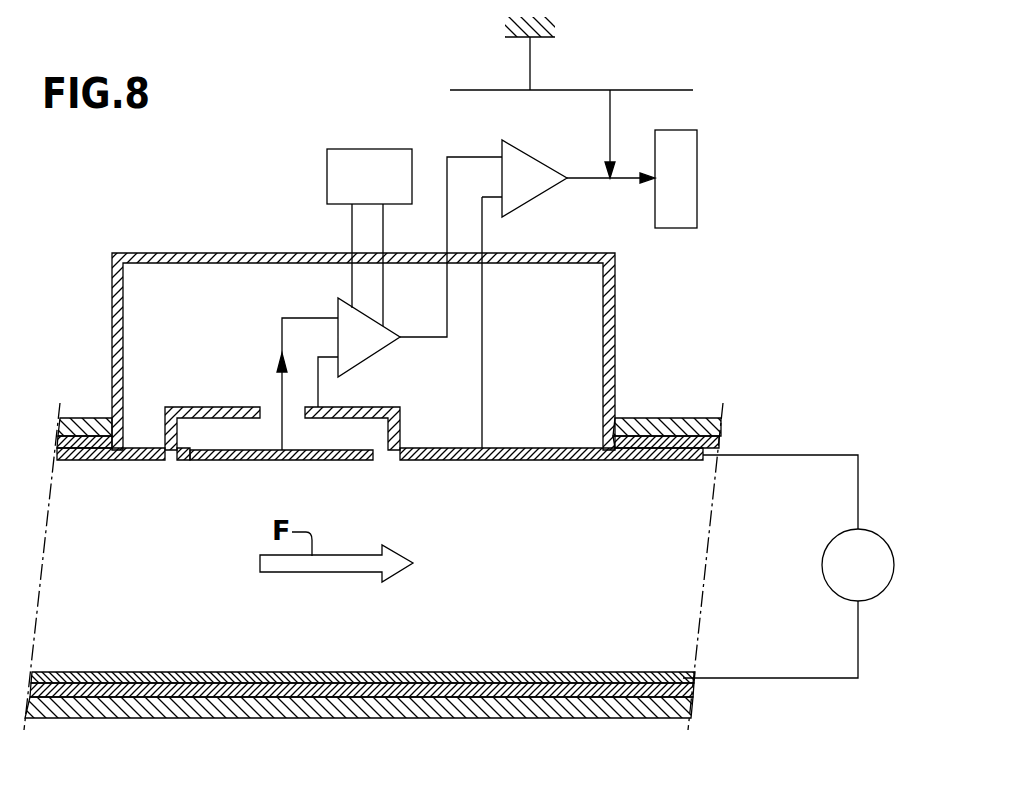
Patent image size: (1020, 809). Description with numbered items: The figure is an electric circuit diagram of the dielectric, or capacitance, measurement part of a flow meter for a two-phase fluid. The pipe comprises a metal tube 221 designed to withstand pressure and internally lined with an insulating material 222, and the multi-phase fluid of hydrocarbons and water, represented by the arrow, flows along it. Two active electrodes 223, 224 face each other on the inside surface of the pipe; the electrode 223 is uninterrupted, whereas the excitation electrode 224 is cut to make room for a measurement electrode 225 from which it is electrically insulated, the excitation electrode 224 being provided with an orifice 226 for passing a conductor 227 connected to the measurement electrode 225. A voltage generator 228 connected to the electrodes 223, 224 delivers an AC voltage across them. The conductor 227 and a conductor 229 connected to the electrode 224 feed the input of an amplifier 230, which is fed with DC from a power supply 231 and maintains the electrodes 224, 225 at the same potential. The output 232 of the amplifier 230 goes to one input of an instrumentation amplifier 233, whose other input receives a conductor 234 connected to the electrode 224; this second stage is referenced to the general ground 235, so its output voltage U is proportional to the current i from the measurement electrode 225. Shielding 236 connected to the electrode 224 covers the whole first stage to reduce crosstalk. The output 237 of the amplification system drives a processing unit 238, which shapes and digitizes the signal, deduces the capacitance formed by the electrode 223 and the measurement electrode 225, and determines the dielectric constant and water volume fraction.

The metal tube 221 is at (185, 708).
The insulating material 222 is at (330, 697).
The active electrode 223 is at (632, 672).
The excitation electrode 224 is at (678, 462).
The measurement electrode 225 is at (245, 462).
The orifice 226 is at (270, 410).
The conductor 227 is at (310, 287).
The voltage generator 228 is at (835, 562).
The conductor 229 is at (322, 385).
The amplifier 230 is at (378, 343).
The power supply 231 is at (370, 160).
The output of the amplifier 232 is at (480, 157).
The instrumentation amplifier 233 is at (518, 177).
The conductor 234 is at (482, 383).
The general ground 235 is at (482, 90).
The shielding 236 is at (215, 253).
The output of the amplification system 237 is at (572, 180).
The processing unit 238 is at (676, 188).